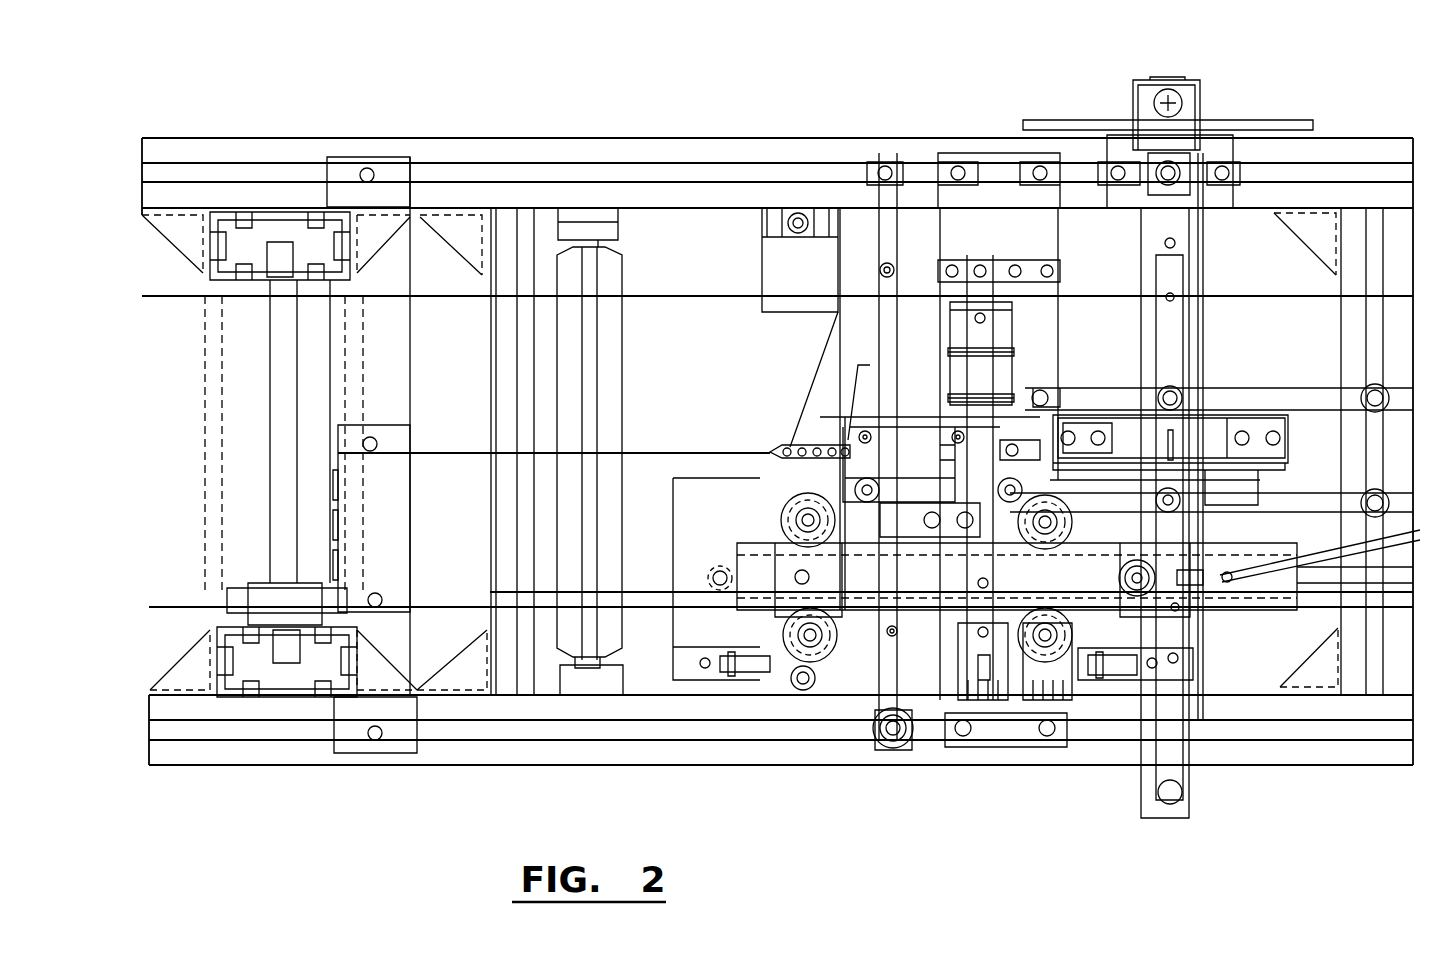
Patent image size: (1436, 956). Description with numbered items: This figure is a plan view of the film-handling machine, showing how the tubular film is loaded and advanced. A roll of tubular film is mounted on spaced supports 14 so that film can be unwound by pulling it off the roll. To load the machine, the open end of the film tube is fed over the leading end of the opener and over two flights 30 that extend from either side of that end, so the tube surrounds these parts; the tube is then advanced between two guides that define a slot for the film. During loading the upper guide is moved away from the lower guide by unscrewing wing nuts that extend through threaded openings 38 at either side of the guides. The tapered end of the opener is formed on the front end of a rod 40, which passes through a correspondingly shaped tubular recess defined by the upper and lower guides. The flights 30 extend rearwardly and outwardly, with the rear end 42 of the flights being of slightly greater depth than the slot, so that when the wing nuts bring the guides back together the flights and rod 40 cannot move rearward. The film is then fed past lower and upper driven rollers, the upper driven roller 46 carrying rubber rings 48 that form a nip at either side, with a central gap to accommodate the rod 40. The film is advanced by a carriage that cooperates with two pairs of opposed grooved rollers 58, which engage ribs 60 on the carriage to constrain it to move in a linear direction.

The spaced supports 14 is at (280, 250).
The flights 30 is at (840, 322).
The threaded openings 38 is at (894, 270).
The rod 40 is at (925, 440).
The rear end of the flights 42 is at (875, 338).
The upper driven roller 46 is at (1020, 327).
The rubber rings 48 is at (1015, 388).
The grooved rollers 58 is at (793, 492).
The ribs 60 is at (745, 540).